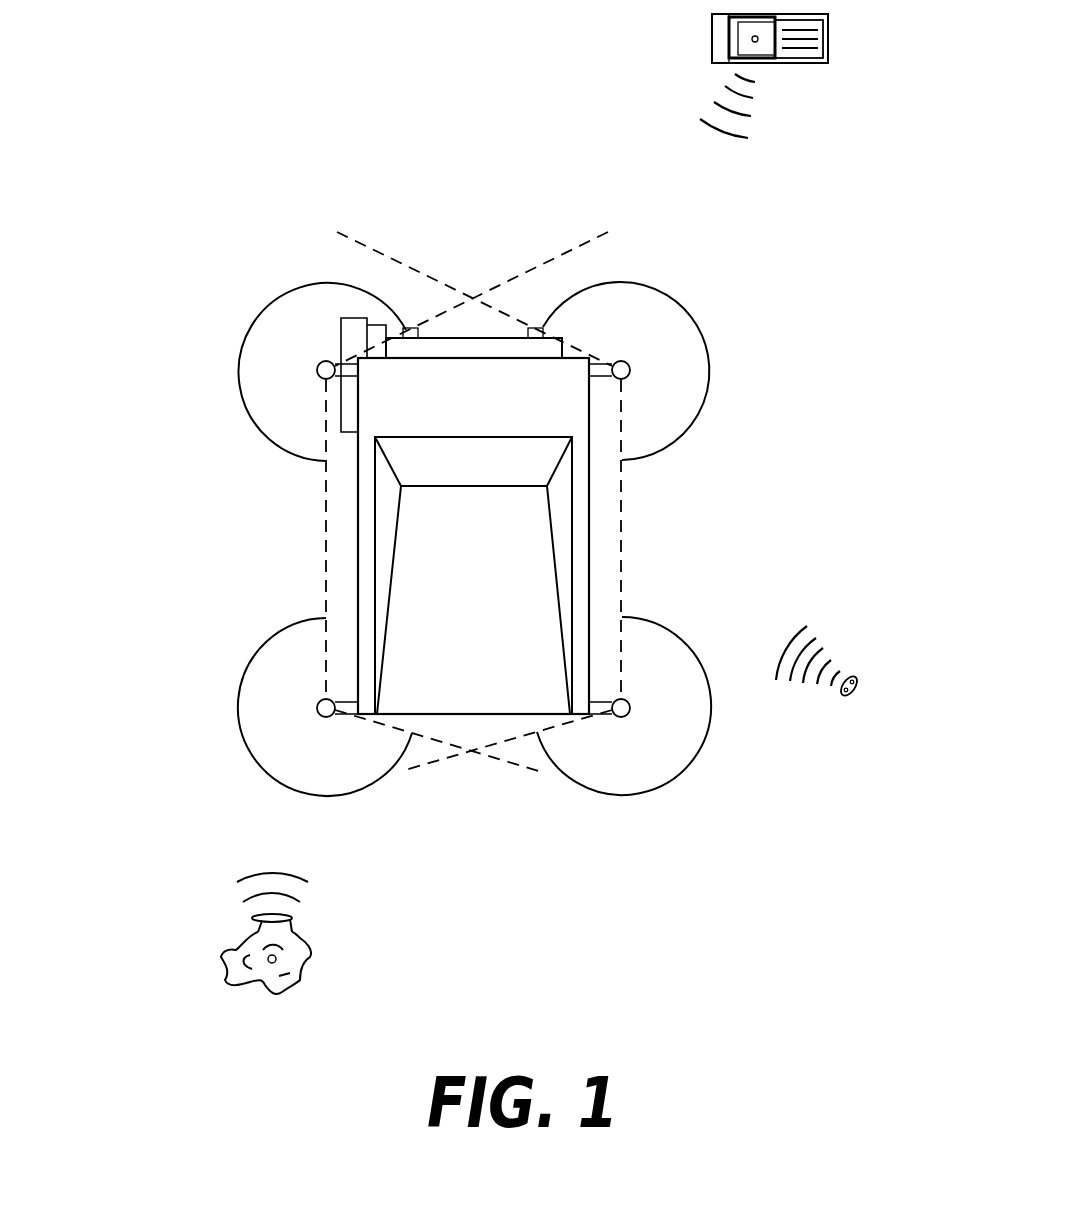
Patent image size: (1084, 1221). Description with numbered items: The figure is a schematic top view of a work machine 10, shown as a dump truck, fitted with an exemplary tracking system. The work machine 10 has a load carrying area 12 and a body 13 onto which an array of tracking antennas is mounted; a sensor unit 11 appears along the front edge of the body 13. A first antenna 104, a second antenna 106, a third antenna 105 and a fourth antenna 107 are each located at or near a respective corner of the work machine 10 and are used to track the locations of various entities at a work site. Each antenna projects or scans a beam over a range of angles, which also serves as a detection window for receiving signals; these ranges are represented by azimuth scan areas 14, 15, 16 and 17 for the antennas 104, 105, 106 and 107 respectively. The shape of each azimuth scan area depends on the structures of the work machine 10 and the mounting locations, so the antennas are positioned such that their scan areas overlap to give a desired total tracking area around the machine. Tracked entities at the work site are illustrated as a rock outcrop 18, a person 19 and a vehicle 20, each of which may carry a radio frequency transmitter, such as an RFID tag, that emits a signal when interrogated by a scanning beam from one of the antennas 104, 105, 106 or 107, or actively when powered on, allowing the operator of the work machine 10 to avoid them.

The work machine 10 is at (118, 200).
The sensor unit 11 is at (468, 338).
The load carrying area 12 is at (467, 693).
The body 13 is at (588, 522).
The azimuth scan area 14 is at (697, 317).
The azimuth scan area 15 is at (627, 795).
The azimuth scan area 16 is at (239, 355).
The azimuth scan area 17 is at (252, 657).
The rock outcrop 18 is at (305, 968).
The person 19 is at (858, 683).
The vehicle 20 is at (828, 36).
The first antenna 104 is at (630, 370).
The third antenna 105 is at (630, 713).
The second antenna 106 is at (317, 370).
The fourth antenna 107 is at (320, 710).